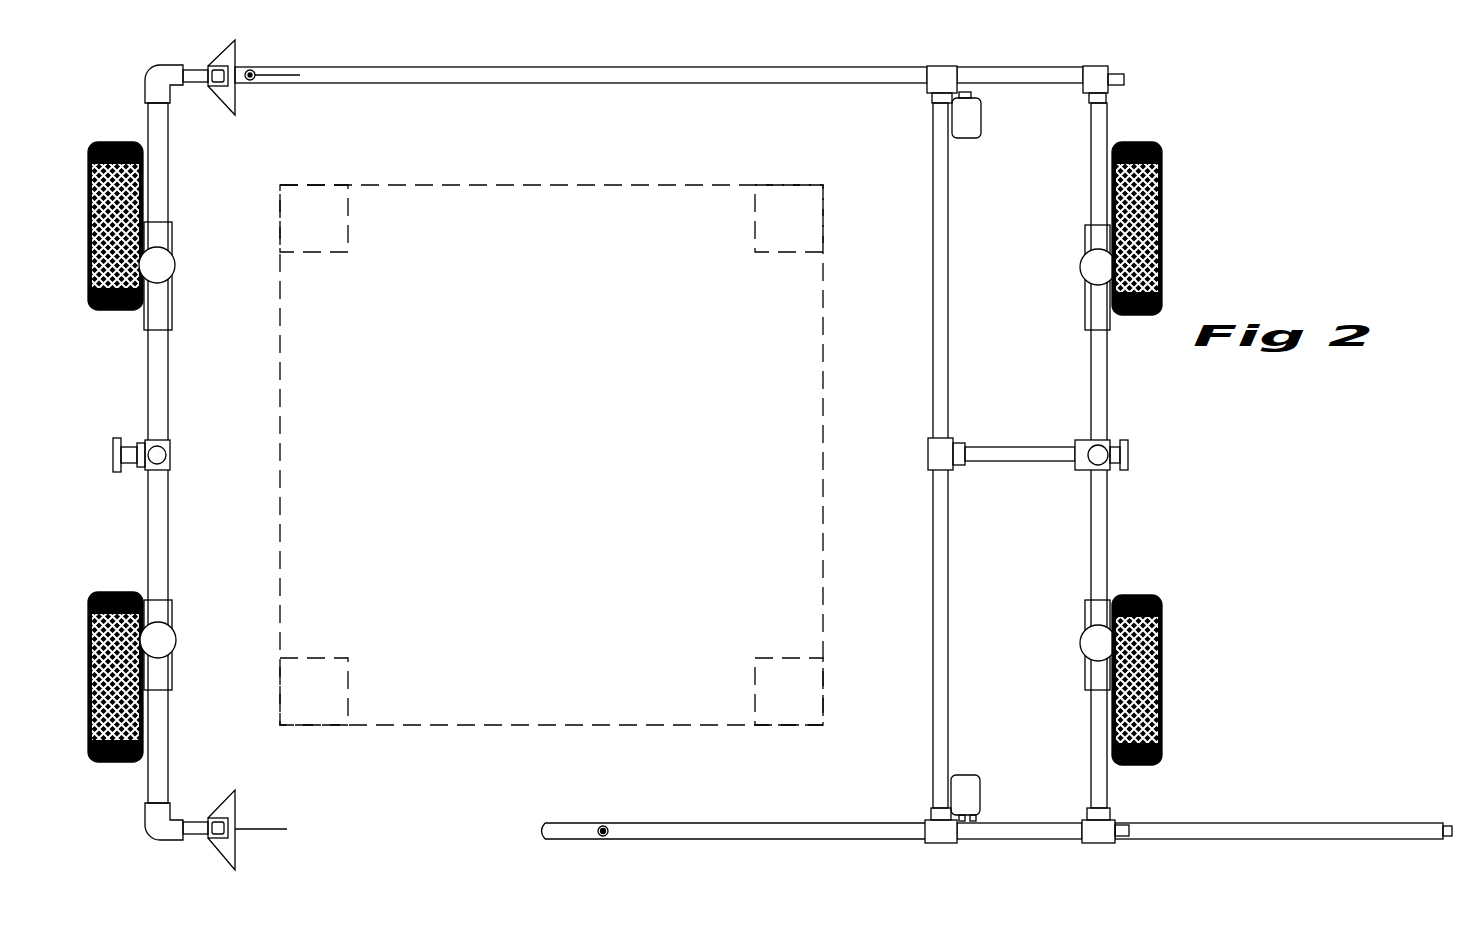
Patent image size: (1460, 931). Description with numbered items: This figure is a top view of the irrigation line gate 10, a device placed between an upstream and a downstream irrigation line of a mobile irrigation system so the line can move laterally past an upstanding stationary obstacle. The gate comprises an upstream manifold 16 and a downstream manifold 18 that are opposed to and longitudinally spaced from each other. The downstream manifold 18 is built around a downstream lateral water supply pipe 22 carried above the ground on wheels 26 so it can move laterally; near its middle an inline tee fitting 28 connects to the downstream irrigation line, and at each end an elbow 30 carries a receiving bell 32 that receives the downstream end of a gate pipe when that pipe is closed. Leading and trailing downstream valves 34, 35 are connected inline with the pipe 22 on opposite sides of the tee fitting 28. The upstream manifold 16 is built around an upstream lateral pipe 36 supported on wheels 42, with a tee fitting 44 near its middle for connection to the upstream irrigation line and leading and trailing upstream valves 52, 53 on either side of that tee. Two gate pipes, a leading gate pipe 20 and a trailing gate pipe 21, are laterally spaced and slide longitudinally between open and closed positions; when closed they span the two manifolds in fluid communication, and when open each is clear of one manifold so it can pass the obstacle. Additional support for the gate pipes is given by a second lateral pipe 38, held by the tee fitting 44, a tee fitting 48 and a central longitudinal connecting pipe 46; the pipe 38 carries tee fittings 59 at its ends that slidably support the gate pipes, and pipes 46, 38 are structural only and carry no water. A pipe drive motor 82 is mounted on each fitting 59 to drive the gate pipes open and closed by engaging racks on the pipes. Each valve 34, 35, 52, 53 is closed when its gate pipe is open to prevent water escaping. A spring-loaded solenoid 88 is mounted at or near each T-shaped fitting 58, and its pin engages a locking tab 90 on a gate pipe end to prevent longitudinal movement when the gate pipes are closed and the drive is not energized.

The irrigation line gate 10 is at (770, 454).
The upstream manifold 16 is at (1036, 449).
The downstream manifold 18 is at (219, 454).
The leading gate pipe 20 is at (490, 80).
The trailing gate pipe 21 is at (700, 820).
The downstream lateral water supply pipe 22 is at (166, 395).
The wheels 26 is at (108, 142).
The inline tee fitting 28 is at (140, 440).
The elbow 30 is at (160, 77).
The receiving bell 32 is at (232, 95).
The leading downstream valve 34 is at (166, 265).
The trailing downstream valve 35 is at (166, 640).
The upstream lateral pipe 36 is at (1110, 556).
The second lateral pipe 38 is at (947, 395).
The wheels 42 is at (1163, 180).
The tee fitting 44 is at (1130, 455).
The central longitudinal connecting pipe 46 is at (1060, 458).
The tee fitting 48 is at (935, 452).
The leading upstream valve 52 is at (1092, 266).
The trailing upstream valve 53 is at (1090, 645).
The T-shaped fitting 58 is at (1105, 88).
The tee fitting 59 is at (932, 82).
The pipe drive motor 82 is at (968, 118).
The spring-loaded solenoid 88 is at (1125, 80).
The locking tab 90 is at (1447, 825).